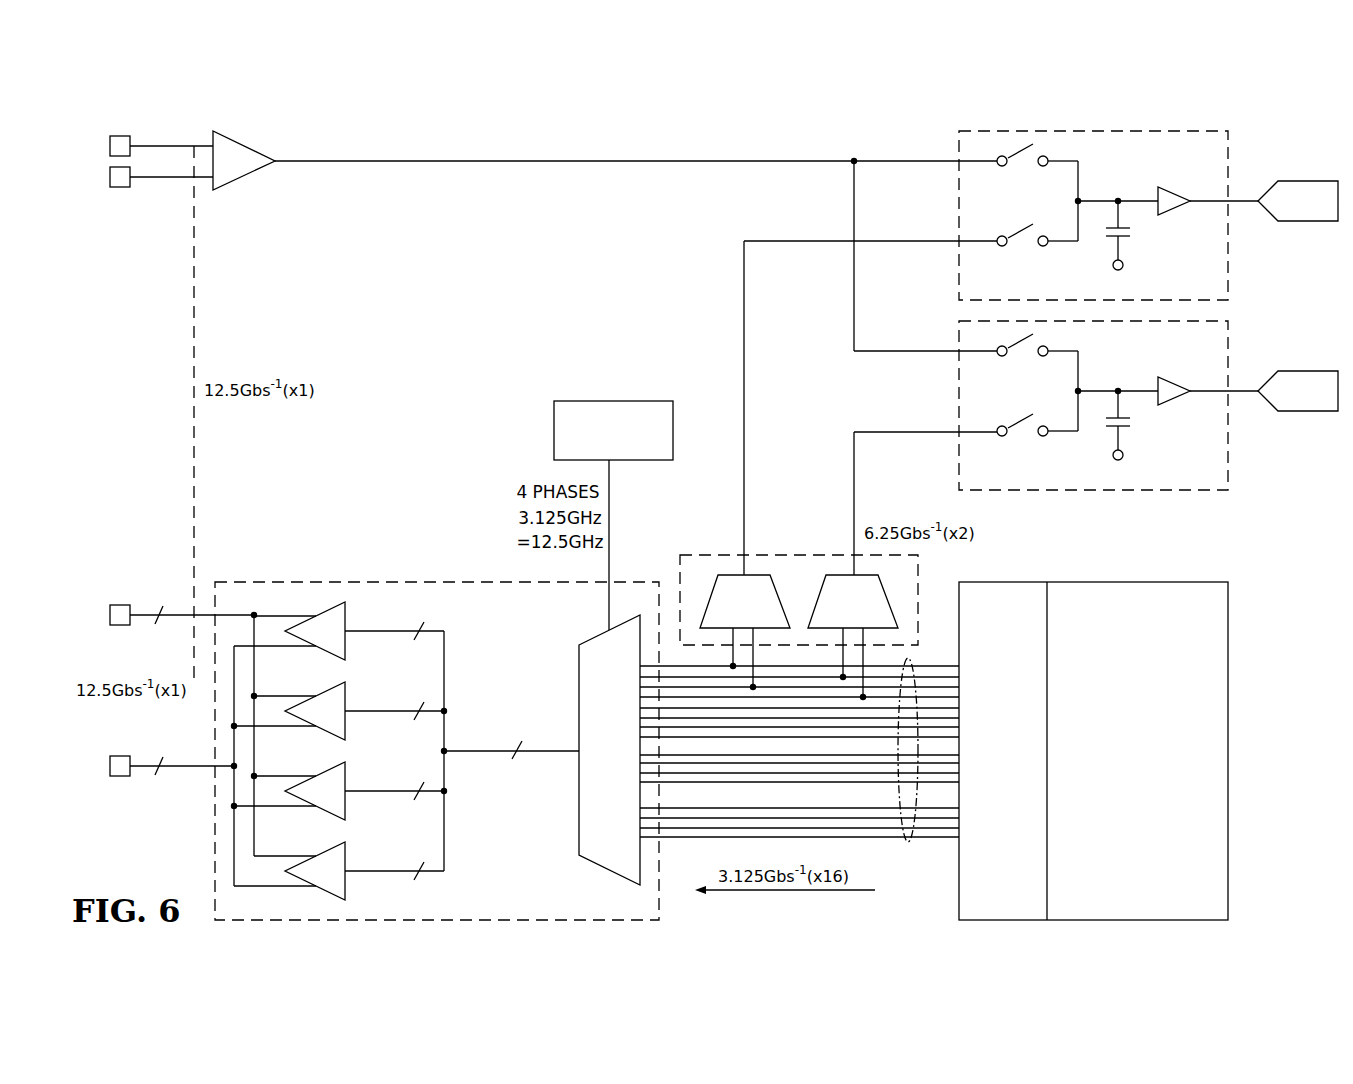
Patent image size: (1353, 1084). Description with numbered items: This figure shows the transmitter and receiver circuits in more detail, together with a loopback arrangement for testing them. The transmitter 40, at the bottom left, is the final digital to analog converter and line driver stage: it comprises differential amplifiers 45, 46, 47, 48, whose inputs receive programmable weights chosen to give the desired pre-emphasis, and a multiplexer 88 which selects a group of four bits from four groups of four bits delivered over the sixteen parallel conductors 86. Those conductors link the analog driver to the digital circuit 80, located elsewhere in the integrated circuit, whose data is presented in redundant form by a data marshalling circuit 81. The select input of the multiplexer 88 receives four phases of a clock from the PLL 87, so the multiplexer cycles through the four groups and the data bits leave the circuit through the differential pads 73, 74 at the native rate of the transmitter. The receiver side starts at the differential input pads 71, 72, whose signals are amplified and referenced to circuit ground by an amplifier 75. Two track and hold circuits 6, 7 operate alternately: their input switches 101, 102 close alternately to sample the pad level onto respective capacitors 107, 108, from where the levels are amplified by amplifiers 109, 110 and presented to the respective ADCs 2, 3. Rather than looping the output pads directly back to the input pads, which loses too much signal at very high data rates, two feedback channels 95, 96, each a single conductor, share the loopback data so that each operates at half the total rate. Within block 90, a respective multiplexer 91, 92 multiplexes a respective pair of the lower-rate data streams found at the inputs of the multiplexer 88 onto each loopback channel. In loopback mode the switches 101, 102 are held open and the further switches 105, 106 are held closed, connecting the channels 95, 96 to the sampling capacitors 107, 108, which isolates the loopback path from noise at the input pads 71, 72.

The differential input pad 71 is at (110, 145).
The differential input pad 72 is at (110, 176).
The amplifier 75 is at (240, 143).
The differential pad 73 is at (110, 616).
The differential pad 74 is at (110, 766).
The transmitter circuit 40 is at (210, 826).
The differential amplifier 45 is at (348, 639).
The differential amplifier 46 is at (348, 719).
The differential amplifier 47 is at (348, 799).
The differential amplifier 48 is at (348, 879).
The multiplexer 88 is at (597, 763).
The PLL 87 is at (554, 432).
The loopback multiplexer block 90 is at (728, 554).
The multiplexer 91 is at (733, 615).
The multiplexer 92 is at (842, 615).
The feedback channel 95 is at (748, 470).
The feedback channel 96 is at (858, 470).
The parallel conductors 86 is at (908, 842).
The digital circuit 80 is at (1118, 763).
The data marshalling circuit 81 is at (991, 763).
The track and hold circuit 6 is at (1235, 155).
The track and hold circuit 7 is at (1235, 345).
The analog to digital converter 2 is at (1310, 181).
The analog to digital converter 3 is at (1310, 371).
The amplifier 109 is at (1178, 192).
The amplifier 110 is at (1178, 382).
The input switch 101 is at (1024, 174).
The input switch 102 is at (1024, 364).
The switch 105 is at (1024, 254).
The switch 106 is at (1024, 444).
The capacitor 107 is at (1134, 232).
The capacitor 108 is at (1134, 422).